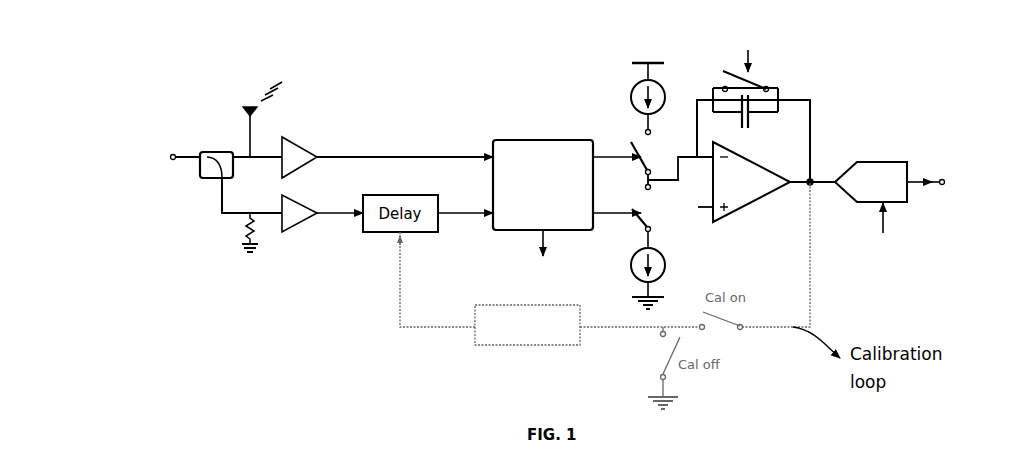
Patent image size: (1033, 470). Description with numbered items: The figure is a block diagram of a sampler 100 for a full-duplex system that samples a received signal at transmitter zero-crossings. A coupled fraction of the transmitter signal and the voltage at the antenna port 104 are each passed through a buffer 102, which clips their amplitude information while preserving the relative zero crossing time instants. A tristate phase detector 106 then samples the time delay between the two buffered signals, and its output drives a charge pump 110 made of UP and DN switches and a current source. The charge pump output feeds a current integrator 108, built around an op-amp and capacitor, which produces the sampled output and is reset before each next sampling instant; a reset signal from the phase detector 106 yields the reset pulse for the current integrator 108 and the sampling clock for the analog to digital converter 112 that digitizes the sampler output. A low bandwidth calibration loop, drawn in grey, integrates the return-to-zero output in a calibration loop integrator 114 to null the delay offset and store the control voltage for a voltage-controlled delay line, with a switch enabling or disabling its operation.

The sampler 100 is at (134, 147).
The buffer 102 is at (298, 227).
The antenna port 104 is at (258, 112).
The phase detector 106 is at (512, 140).
The current integrator 108 is at (742, 120).
The charge pump 110 is at (641, 205).
The analog to digital converter 112 is at (880, 162).
The calibration loop integrator 114 is at (507, 345).